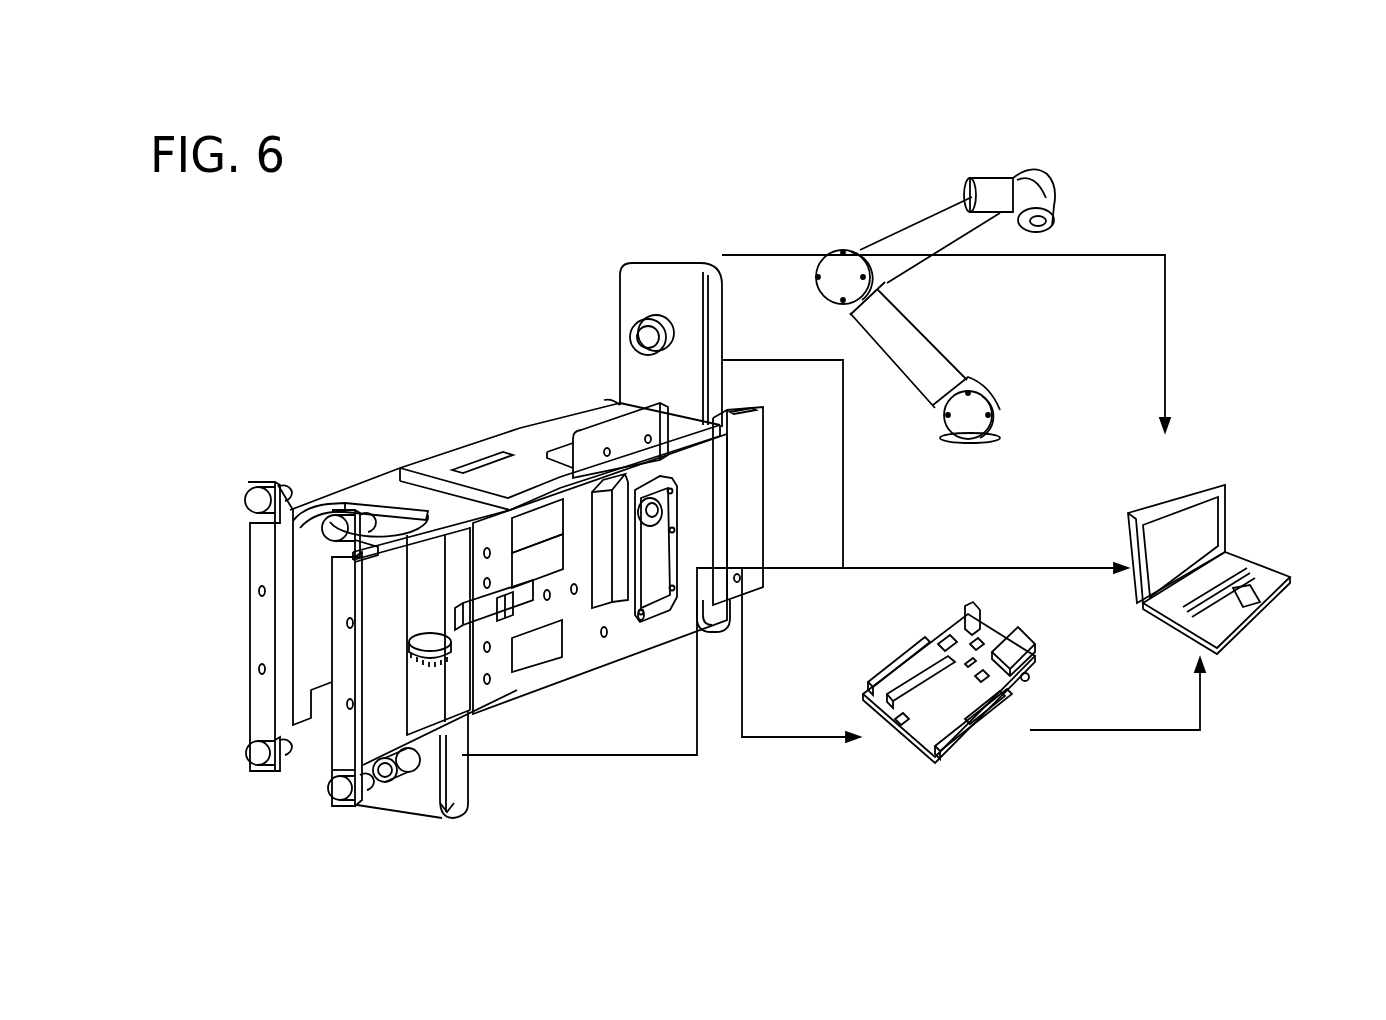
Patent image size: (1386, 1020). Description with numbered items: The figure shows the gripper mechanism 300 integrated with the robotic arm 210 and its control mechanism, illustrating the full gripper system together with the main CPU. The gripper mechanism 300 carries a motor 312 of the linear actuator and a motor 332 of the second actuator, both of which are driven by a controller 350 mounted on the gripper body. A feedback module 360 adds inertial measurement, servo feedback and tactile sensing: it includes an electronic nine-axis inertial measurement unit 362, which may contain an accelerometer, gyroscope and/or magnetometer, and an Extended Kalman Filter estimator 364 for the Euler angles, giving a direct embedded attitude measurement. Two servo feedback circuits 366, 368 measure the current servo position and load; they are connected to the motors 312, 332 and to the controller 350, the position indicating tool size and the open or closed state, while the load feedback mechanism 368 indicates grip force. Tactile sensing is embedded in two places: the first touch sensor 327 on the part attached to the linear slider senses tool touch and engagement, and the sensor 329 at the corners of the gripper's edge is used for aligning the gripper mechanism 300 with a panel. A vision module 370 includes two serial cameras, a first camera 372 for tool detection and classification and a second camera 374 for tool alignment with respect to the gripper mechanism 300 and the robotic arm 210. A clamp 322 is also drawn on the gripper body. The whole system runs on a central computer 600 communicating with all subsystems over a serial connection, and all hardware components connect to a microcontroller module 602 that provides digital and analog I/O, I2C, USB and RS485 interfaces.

The gripper mechanism 300 is at (283, 452).
The robotic arm 210 is at (930, 347).
The motor 312 is at (649, 590).
The clamp 322 is at (388, 494).
The first touch sensor 327 is at (830, 186).
The sensor 329 is at (228, 516).
The motor 332 is at (553, 670).
The controller 350 is at (532, 441).
The feedback module 360 is at (806, 22).
The inertial measurement unit 362 is at (468, 452).
The Extended Kalman Filter estimator 364 is at (490, 418).
The feedback circuit 366 is at (553, 550).
The load feedback mechanism 368 is at (553, 585).
The vision module 370 is at (598, 170).
The first camera 372 is at (589, 318).
The second camera 374 is at (392, 786).
The central computer 600 is at (1225, 515).
The microcontroller module 602 is at (970, 735).